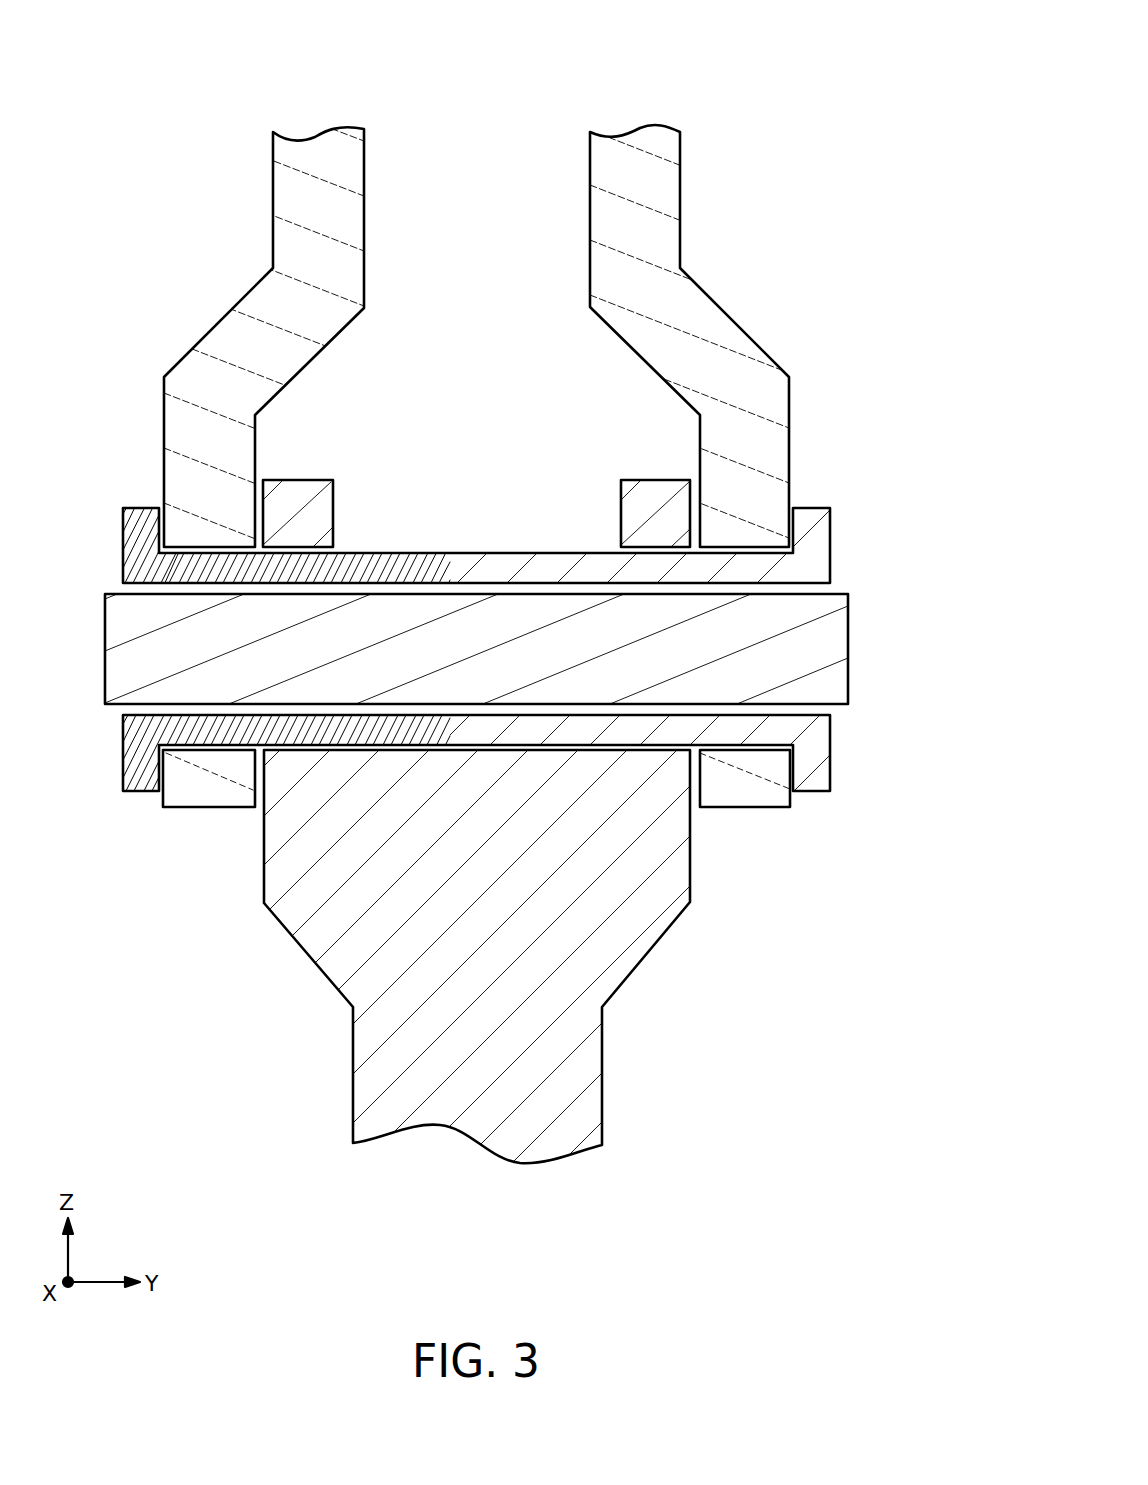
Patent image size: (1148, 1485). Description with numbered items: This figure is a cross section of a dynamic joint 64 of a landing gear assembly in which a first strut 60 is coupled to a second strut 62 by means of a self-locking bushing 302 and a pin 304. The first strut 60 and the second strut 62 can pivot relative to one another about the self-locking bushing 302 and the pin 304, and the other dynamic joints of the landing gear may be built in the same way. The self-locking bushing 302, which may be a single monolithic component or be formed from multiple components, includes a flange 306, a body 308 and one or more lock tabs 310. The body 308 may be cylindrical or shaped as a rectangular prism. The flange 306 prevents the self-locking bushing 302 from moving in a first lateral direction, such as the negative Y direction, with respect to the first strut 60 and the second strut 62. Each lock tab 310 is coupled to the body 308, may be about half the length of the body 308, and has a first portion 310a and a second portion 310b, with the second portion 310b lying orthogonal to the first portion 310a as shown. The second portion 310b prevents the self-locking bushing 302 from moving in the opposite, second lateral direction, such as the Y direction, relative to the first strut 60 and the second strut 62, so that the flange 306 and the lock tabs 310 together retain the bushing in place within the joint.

The first strut 60 is at (237, 326).
The second strut 62 is at (323, 942).
The dynamic joint 64 is at (141, 124).
The self-locking bushing 302 is at (893, 452).
The pin 304 is at (845, 662).
The flange 306 is at (830, 538).
The body 308 is at (590, 570).
The lock tab 310 is at (348, 568).
The first portion 310a is at (413, 567).
The second portion 310b is at (135, 508).